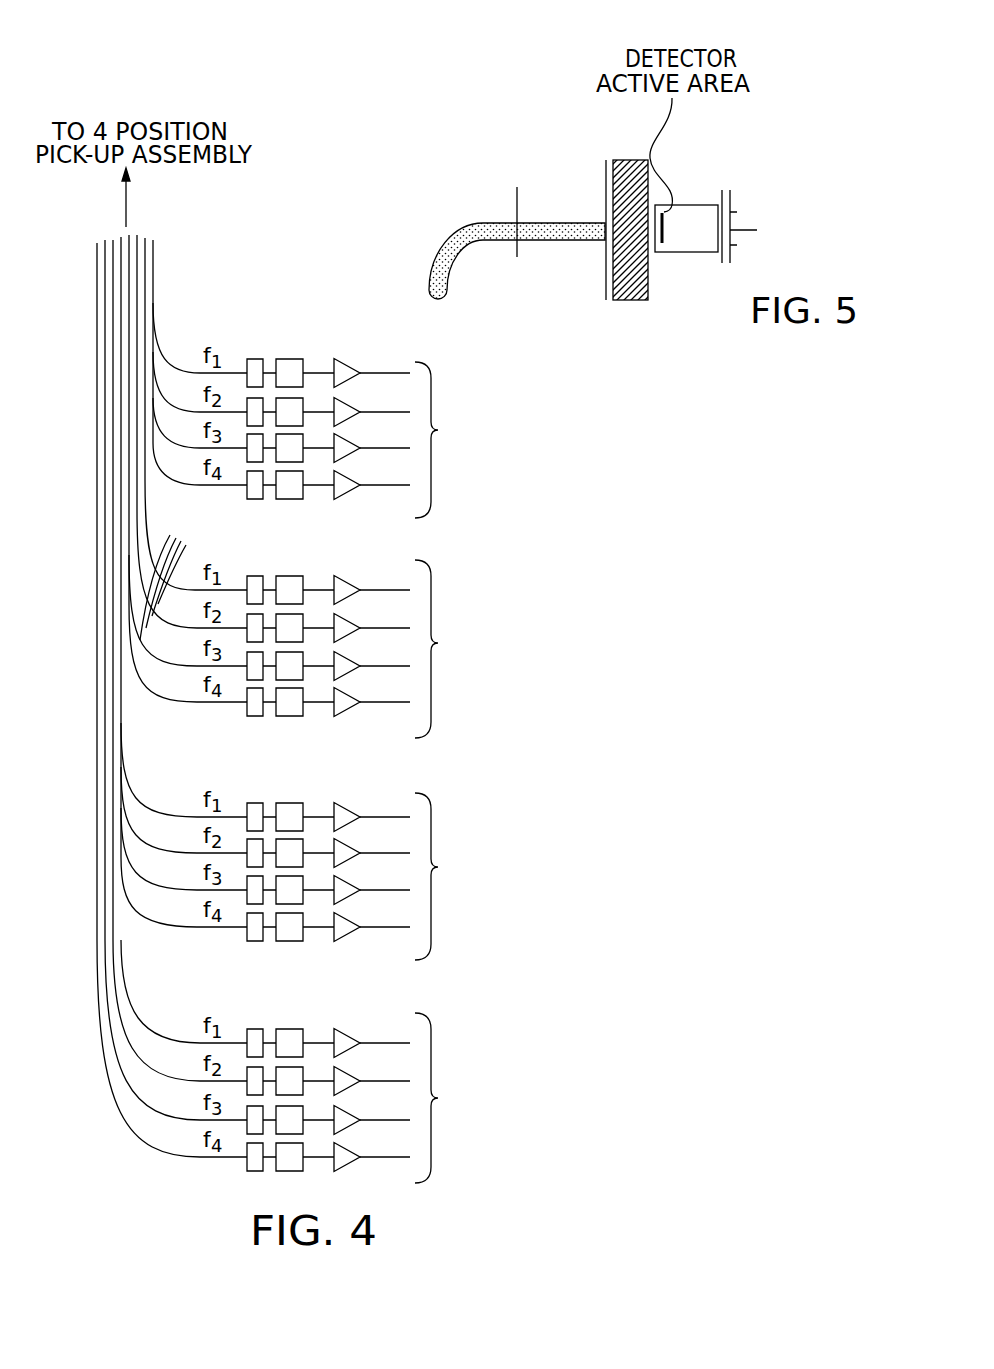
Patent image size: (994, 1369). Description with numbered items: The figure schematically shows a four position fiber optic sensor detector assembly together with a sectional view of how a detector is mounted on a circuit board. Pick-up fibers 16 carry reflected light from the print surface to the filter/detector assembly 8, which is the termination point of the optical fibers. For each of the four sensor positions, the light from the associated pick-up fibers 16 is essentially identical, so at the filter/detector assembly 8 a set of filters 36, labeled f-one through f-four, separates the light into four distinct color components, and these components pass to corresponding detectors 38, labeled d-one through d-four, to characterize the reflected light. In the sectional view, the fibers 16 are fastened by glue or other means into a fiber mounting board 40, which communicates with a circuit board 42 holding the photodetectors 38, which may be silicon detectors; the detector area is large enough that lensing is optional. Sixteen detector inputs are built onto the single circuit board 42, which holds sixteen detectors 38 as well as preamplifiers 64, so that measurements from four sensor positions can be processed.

In FIG. 4, the filter/detector assembly 8 is at (797, 796).
In FIG. 4, the pick-up fibers 16 is at (96, 540).
In FIG. 5, the pick-up fibers 16 is at (455, 234).
In FIG. 4, the filters 36 is at (256, 358).
In FIG. 5, the filters 36 is at (646, 299).
In FIG. 4, the detectors 38 is at (291, 357).
In FIG. 5, the detectors 38 is at (695, 212).
In FIG. 5, the fiber mounting board 40 is at (537, 203).
In FIG. 5, the circuit board 42 is at (757, 230).
In FIG. 4, the preamplifiers 64 is at (352, 487).